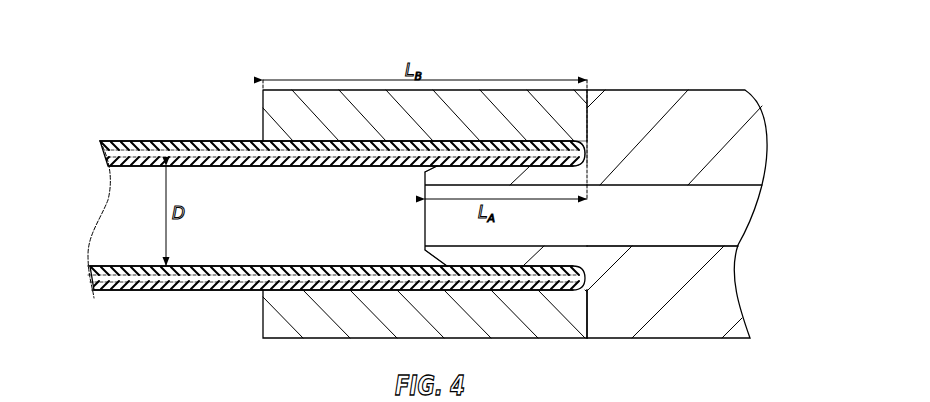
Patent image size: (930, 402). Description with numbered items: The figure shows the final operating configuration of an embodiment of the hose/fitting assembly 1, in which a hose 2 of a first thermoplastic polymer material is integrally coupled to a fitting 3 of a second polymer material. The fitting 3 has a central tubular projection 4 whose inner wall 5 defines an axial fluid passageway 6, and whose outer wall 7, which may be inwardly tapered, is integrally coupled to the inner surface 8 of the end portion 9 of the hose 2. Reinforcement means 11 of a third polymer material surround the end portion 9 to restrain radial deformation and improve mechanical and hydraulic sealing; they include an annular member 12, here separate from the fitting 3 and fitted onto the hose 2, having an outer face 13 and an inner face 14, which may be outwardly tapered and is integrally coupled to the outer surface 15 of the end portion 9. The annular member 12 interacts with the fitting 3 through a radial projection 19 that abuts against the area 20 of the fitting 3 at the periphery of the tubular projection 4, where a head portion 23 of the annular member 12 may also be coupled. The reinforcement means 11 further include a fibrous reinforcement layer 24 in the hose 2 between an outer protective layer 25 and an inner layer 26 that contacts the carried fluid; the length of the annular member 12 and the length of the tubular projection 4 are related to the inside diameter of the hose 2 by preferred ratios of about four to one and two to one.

The hose/fitting assembly 1 is at (105, 93).
The hose 2 is at (176, 133).
The fitting 3 is at (754, 80).
The central tubular projection 4 is at (438, 258).
The inner wall 5 is at (462, 195).
The axial fluid passageway 6 is at (672, 215).
The outer wall 7 is at (566, 146).
The inner surface 8 is at (430, 178).
The end portion 9 is at (374, 230).
The reinforcement means 11 is at (592, 342).
The annular member 12 is at (270, 116).
The outer face 13 is at (295, 90).
The inner face 14 is at (318, 143).
The outer surface 15 is at (325, 140).
The radial projection 19 is at (590, 285).
The area 20 is at (594, 121).
The head portion 23 is at (575, 118).
The fibrous reinforcement layer 24 is at (190, 285).
The outer protective layer 25 is at (113, 290).
The inner layer 26 is at (255, 278).